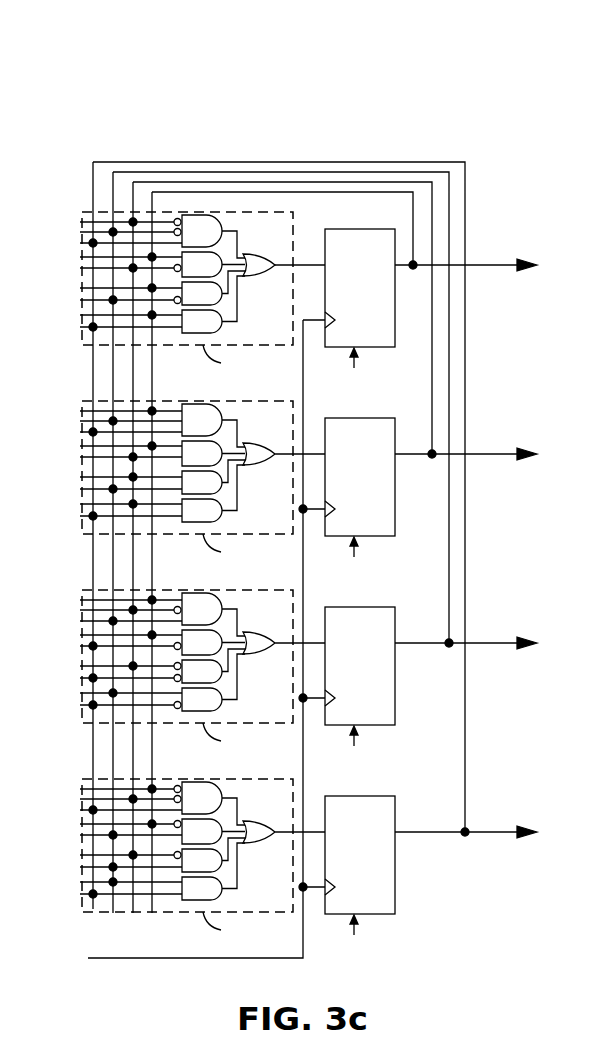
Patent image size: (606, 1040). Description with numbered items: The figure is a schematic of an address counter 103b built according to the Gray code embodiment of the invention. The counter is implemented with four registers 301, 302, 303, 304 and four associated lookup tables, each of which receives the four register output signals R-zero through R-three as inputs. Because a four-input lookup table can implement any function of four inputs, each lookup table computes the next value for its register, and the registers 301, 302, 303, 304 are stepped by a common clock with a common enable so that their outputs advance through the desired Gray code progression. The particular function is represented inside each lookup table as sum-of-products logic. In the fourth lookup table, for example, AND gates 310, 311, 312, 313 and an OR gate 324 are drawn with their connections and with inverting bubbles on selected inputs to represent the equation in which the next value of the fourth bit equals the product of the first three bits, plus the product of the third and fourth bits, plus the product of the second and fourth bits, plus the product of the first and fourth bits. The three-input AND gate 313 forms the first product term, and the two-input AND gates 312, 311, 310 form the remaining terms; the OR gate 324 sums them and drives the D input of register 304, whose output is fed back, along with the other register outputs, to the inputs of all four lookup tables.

The address counter 103b is at (370, 60).
The register 301 is at (349, 879).
The register 302 is at (349, 690).
The register 303 is at (349, 501).
The register 304 is at (349, 312).
The AND gate 310 is at (202, 321).
The AND gate 311 is at (202, 293).
The AND gate 312 is at (202, 264).
The AND gate 313 is at (202, 231).
The OR gate 324 is at (268, 278).